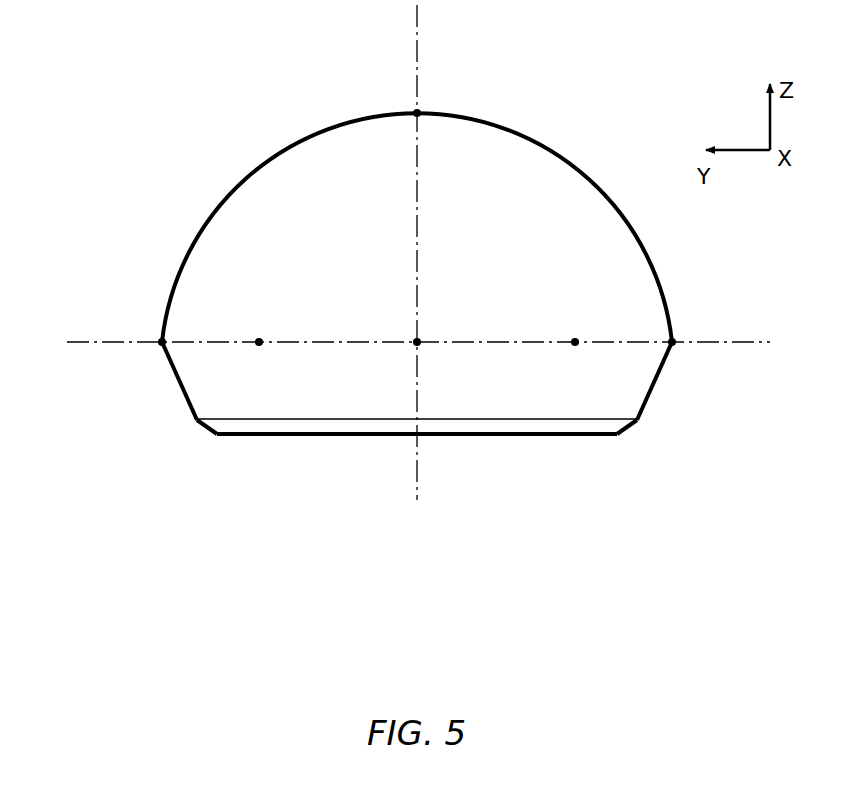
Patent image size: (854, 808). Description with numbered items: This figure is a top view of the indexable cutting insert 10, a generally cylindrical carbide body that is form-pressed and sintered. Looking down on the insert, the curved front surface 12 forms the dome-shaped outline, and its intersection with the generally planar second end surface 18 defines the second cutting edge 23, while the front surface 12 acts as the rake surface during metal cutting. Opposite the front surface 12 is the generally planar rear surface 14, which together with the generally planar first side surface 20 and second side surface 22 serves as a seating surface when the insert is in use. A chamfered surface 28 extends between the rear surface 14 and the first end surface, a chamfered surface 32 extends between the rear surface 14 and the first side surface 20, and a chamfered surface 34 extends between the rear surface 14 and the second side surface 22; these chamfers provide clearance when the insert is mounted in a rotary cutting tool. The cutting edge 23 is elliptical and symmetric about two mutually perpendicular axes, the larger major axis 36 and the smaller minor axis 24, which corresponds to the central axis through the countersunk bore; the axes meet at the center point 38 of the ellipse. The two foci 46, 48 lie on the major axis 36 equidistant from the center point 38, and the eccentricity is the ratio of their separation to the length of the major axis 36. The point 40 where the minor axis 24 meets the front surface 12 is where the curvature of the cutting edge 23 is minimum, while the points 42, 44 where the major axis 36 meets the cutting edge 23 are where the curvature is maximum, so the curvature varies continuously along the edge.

The indexable cutting insert 10 is at (150, 98).
The front surface 12 is at (417, 194).
The rear surface 14 is at (418, 431).
The second end surface 18 is at (559, 205).
The first side surface 20 is at (165, 372).
The second side surface 22 is at (669, 372).
The second cutting edge 23 is at (428, 113).
The minor axis 24 is at (420, 30).
The chamfered surface 28 is at (551, 425).
The chamfered surface 32 is at (197, 437).
The chamfered surface 34 is at (635, 437).
The major axis 36 is at (90, 340).
The center point 38 is at (417, 341).
The point of minimum curvature 40 is at (417, 113).
The point of maximum curvature 42 is at (162, 342).
The point of maximum curvature 44 is at (672, 342).
The focal point 46 is at (259, 342).
The focal point 48 is at (575, 342).